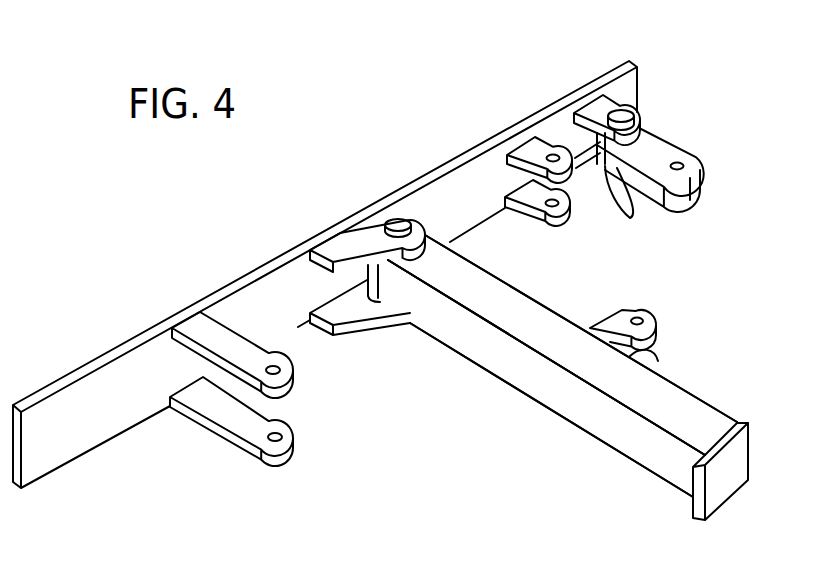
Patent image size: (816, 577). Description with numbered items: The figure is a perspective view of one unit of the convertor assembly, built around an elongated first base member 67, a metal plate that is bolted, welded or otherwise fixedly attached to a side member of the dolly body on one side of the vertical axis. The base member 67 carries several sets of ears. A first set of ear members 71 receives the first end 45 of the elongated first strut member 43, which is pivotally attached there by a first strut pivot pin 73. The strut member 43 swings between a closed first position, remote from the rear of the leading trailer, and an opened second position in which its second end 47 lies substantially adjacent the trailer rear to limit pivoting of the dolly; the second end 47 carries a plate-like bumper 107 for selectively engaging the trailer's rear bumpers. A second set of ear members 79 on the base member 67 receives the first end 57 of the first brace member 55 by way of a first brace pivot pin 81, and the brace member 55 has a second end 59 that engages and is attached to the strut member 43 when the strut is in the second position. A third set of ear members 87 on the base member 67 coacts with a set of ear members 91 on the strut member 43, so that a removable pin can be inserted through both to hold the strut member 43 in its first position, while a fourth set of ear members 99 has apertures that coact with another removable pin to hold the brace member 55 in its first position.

The first strut member 43 is at (589, 366).
The first end of first strut member 45 is at (516, 298).
The second end of first strut member 47 is at (708, 412).
The first brace member 55 is at (672, 125).
The first end of first brace member 57 is at (646, 143).
The second end of first brace member 59 is at (680, 197).
The first base member 67 is at (110, 392).
The first set of ear members 71 is at (353, 262).
The first strut pivot pin 73 is at (405, 219).
The second set of ear members 79 is at (636, 202).
The first brace pivot pin 81 is at (637, 114).
The third set of ear members 87 is at (227, 433).
The set of ear members 91 is at (655, 358).
The fourth set of ear members 99 is at (577, 172).
The plate-like bumper 107 is at (727, 477).